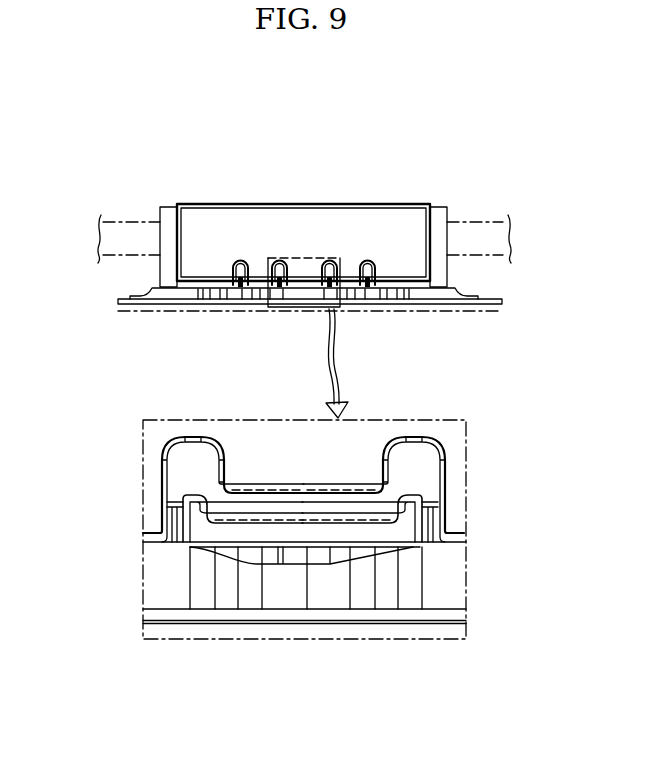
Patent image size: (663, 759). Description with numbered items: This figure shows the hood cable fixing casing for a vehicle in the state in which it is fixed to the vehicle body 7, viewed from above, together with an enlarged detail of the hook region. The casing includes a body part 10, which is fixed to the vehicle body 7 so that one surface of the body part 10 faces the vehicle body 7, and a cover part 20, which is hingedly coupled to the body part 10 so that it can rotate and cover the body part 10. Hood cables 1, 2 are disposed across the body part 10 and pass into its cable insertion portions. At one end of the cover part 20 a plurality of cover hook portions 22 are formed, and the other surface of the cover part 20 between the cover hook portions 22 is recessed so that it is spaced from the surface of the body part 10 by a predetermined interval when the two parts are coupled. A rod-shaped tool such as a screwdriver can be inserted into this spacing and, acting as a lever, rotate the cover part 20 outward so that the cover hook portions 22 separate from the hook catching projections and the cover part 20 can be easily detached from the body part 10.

The hood cable 1 is at (127, 230).
The hood cable 2 is at (475, 230).
The body part 10 is at (166, 204).
The cover part 20 is at (224, 204).
The cover hook portion 22 is at (262, 281).
The vehicle body 7 is at (181, 298).